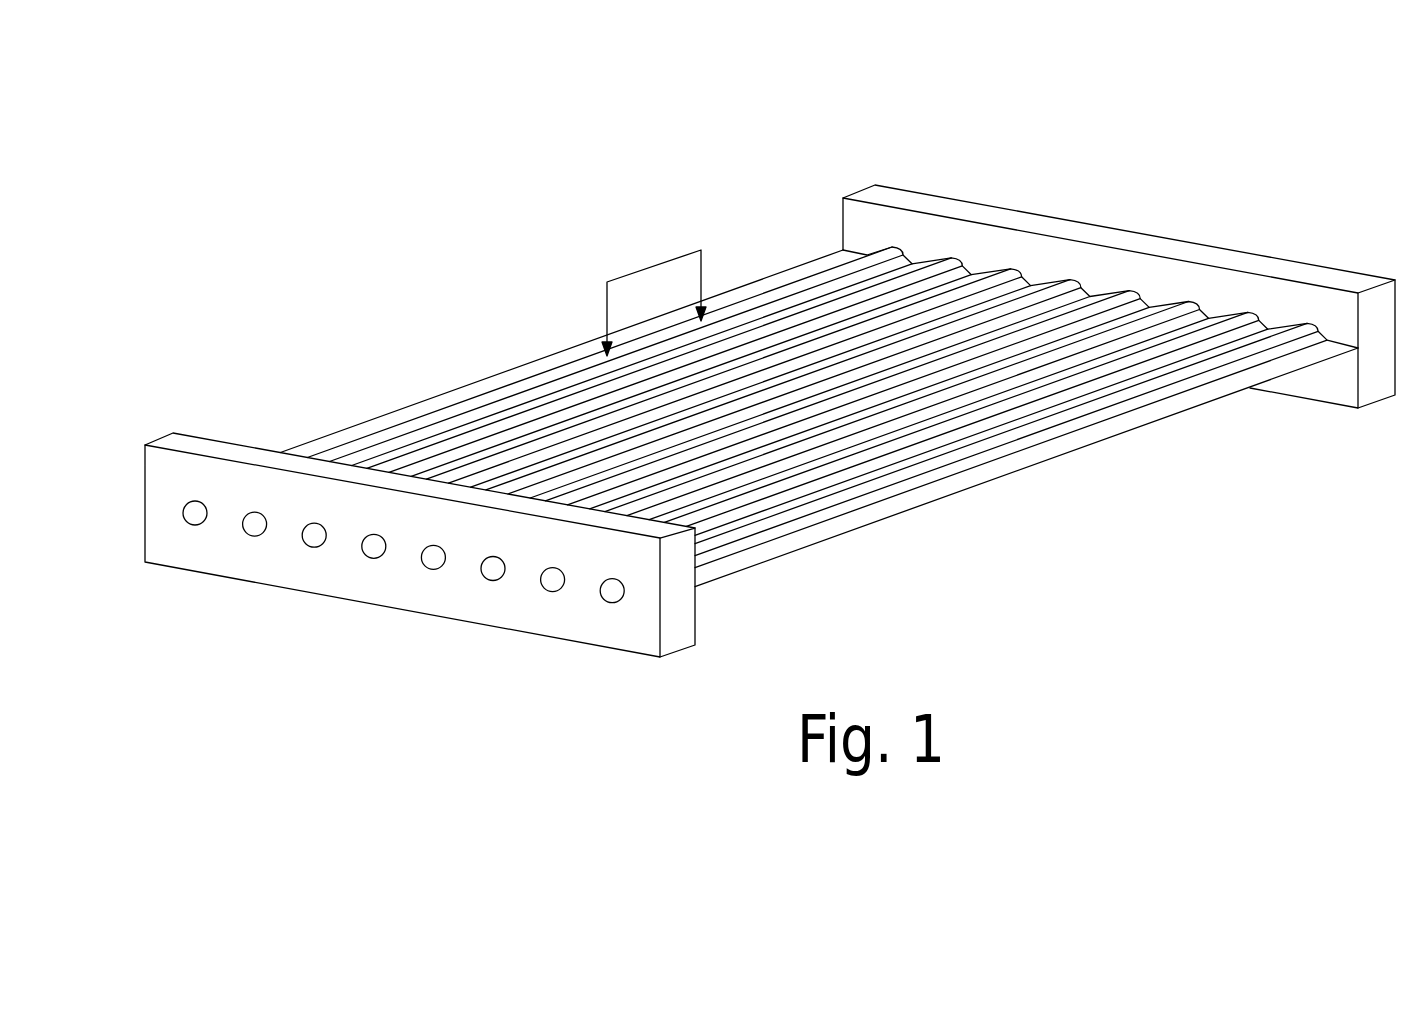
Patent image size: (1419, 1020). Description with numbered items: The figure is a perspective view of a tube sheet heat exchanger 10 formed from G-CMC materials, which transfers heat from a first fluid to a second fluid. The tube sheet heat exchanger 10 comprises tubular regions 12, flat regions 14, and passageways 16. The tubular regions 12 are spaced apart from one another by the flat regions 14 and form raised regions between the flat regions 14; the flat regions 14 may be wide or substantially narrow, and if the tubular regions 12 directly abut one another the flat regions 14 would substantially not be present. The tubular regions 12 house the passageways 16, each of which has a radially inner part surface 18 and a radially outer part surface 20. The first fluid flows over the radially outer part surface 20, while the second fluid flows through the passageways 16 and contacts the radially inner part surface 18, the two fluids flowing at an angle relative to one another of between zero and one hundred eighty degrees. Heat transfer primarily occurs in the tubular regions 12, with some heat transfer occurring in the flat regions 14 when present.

The tube sheet heat exchanger 10 is at (367, 206).
The tubular regions 12 is at (951, 258).
The flat regions 14 is at (1031, 287).
The passageways 16 is at (254, 536).
The radially inner part surface 18 is at (195, 513).
The radially outer part surface 20 is at (383, 432).